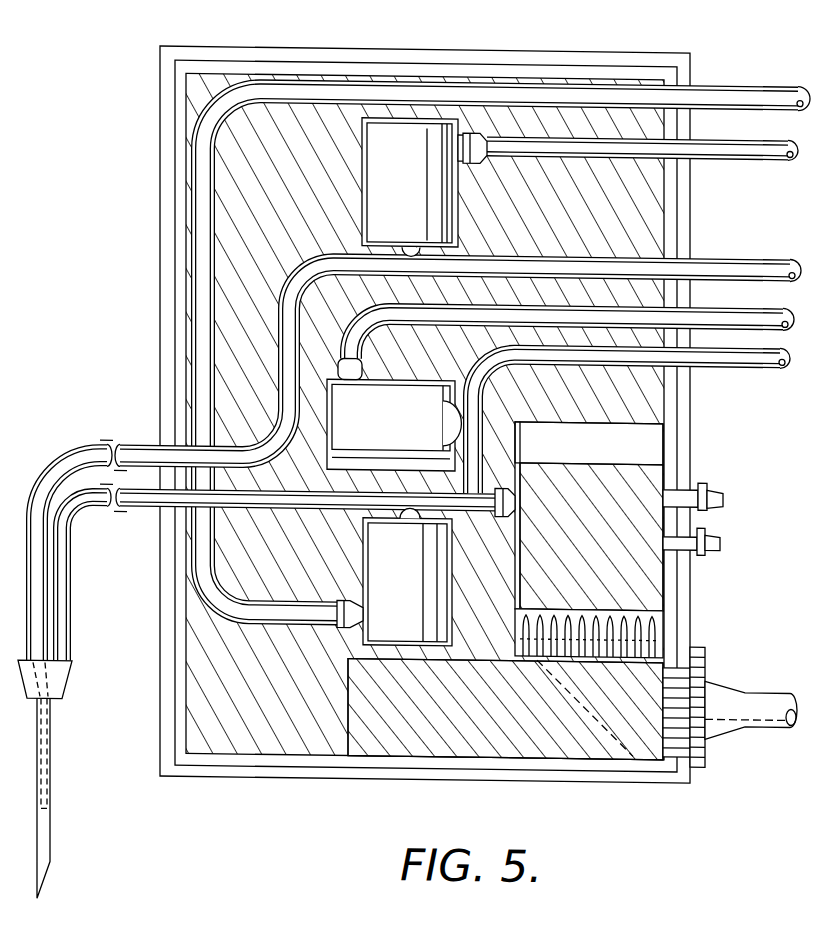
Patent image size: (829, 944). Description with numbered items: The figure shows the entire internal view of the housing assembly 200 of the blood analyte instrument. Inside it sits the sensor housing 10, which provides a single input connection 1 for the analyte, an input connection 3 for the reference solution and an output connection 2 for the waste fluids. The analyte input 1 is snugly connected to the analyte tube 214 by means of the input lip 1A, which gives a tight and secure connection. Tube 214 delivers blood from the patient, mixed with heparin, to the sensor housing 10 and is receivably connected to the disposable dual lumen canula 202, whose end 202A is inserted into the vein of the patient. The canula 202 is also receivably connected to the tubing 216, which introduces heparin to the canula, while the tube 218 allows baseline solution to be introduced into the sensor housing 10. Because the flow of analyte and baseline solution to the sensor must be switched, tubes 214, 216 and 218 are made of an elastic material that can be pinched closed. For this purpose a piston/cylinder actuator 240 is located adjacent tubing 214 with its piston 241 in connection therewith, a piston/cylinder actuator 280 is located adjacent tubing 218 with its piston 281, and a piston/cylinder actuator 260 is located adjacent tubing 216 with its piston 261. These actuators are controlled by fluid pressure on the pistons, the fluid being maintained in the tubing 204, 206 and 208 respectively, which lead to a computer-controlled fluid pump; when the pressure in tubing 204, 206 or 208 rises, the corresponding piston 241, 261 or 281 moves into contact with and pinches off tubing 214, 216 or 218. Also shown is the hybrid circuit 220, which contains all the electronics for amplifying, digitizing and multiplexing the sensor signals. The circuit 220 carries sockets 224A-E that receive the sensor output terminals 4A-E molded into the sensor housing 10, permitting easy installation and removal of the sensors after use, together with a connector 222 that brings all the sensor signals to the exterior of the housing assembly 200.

The housing assembly 200 is at (333, 777).
The dual lumen canula 202 is at (70, 680).
The canula end 202A is at (45, 850).
The tubing 204 is at (742, 89).
The tubing 206 is at (740, 144).
The tubing 208 is at (715, 312).
The analyte tube 214 is at (147, 500).
The tubing 216 is at (718, 255).
The tube 218 is at (745, 355).
The hybrid circuit 220 is at (438, 720).
The connector 222 is at (727, 723).
The sockets 224A-E is at (540, 657).
The sensor output terminals 4A-E is at (633, 752).
The input connection 1 is at (524, 492).
The lip 1A is at (568, 492).
The output connection 2 is at (713, 482).
The input connection 3 is at (717, 541).
The sensor housing 10 is at (643, 556).
The piston/cylinder actuator 240 is at (420, 604).
The piston 241 is at (412, 513).
The piston/cylinder actuator 260 is at (404, 137).
The piston 261 is at (410, 247).
The piston/cylinder actuator 280 is at (403, 439).
The piston 281 is at (445, 404).